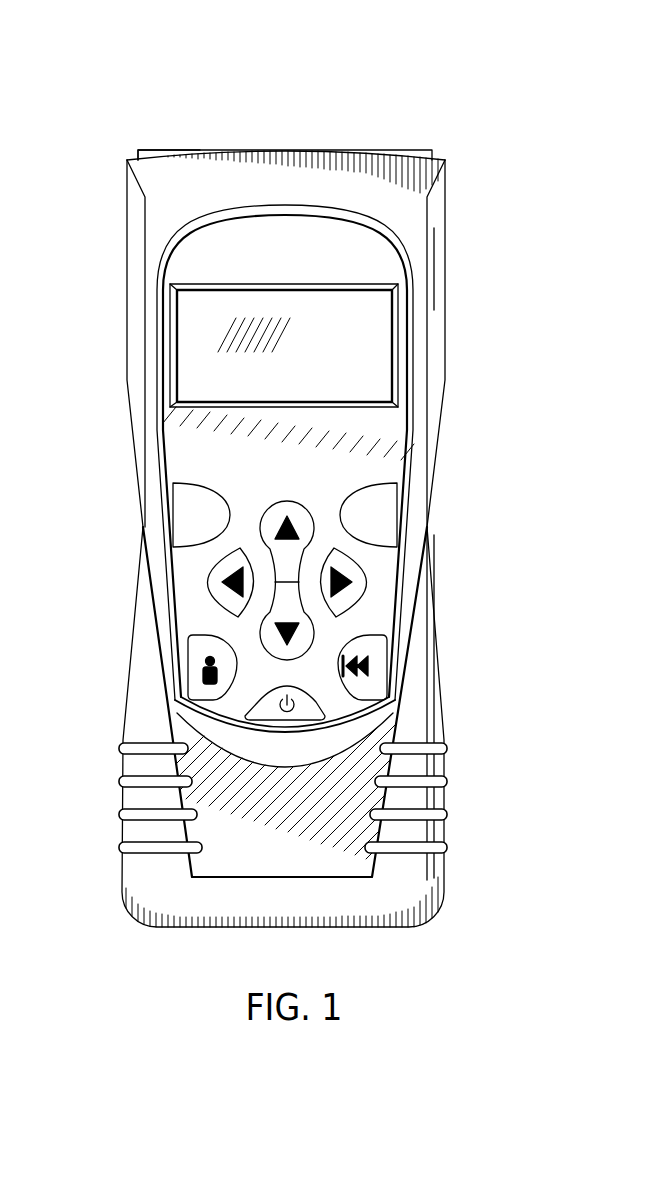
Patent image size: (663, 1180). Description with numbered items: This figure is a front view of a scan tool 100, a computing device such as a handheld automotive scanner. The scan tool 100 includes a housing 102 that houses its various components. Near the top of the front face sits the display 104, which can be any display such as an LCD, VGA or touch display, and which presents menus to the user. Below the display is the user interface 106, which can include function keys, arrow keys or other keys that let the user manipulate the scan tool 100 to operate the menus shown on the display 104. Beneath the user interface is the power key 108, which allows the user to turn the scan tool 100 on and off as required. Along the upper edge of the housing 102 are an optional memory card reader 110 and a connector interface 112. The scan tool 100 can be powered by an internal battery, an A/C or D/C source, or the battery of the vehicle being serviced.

The scan tool 100 is at (298, 42).
The housing 102 is at (148, 718).
The display 104 is at (195, 337).
The user interface 106 is at (227, 577).
The power key 108 is at (307, 710).
The memory card reader 110 is at (412, 150).
The connector interface 112 is at (157, 150).